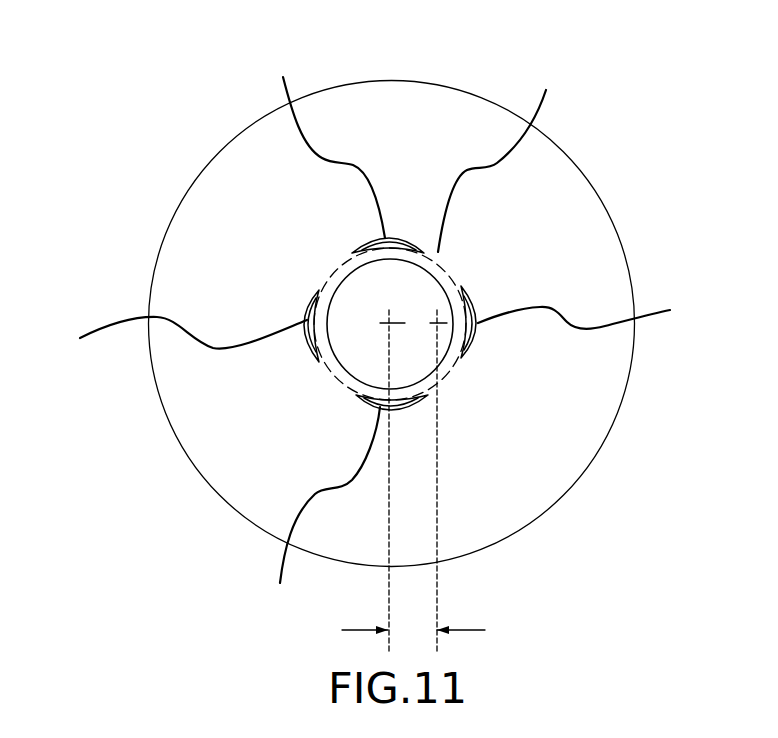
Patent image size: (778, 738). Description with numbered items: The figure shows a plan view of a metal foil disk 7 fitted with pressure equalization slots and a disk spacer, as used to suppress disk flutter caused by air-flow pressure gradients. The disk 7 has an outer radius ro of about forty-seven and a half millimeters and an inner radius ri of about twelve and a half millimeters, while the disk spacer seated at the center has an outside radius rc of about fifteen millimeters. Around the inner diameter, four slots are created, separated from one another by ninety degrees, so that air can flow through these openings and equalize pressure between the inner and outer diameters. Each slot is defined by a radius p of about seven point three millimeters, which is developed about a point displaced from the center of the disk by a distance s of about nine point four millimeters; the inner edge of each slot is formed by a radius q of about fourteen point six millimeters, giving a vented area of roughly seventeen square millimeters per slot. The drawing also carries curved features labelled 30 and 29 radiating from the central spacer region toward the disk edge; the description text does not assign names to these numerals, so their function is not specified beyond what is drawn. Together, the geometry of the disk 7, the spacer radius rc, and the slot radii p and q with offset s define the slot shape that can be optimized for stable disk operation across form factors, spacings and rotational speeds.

The metal foil disk 7 is at (578, 440).
The spiral arms 30 is at (376, 332).
The spiral arm 29 is at (501, 156).
The inner radius ri is at (441, 274).
The outside radius of disk spacer rc is at (455, 373).
The outer radius ro is at (455, 85).
The slot radius p is at (465, 314).
The slot inner edge radius q is at (457, 340).
The slot center displacement s is at (423, 632).